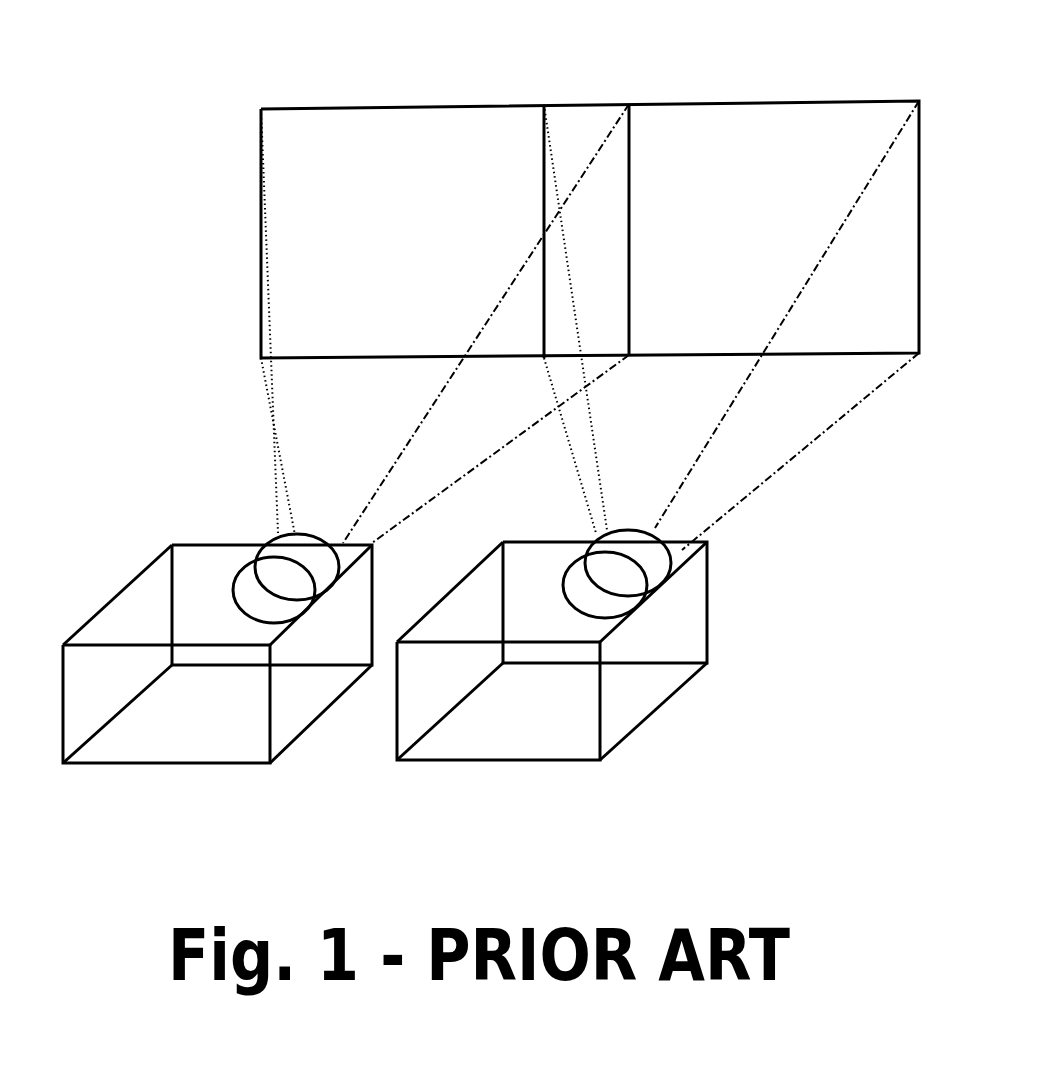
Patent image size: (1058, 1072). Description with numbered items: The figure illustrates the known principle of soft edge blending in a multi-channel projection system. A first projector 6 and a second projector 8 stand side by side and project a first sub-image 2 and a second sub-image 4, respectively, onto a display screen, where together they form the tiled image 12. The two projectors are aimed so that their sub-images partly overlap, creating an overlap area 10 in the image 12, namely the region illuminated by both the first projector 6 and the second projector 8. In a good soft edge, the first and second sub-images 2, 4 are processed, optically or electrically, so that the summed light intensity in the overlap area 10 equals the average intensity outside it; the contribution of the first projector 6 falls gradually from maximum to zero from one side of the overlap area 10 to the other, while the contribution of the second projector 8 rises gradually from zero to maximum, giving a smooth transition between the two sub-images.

The first sub-image 2 is at (307, 223).
The second sub-image 4 is at (843, 327).
The first projector 6 is at (130, 627).
The second projector 8 is at (660, 645).
The overlap area 10 is at (575, 128).
The image 12 is at (778, 78).